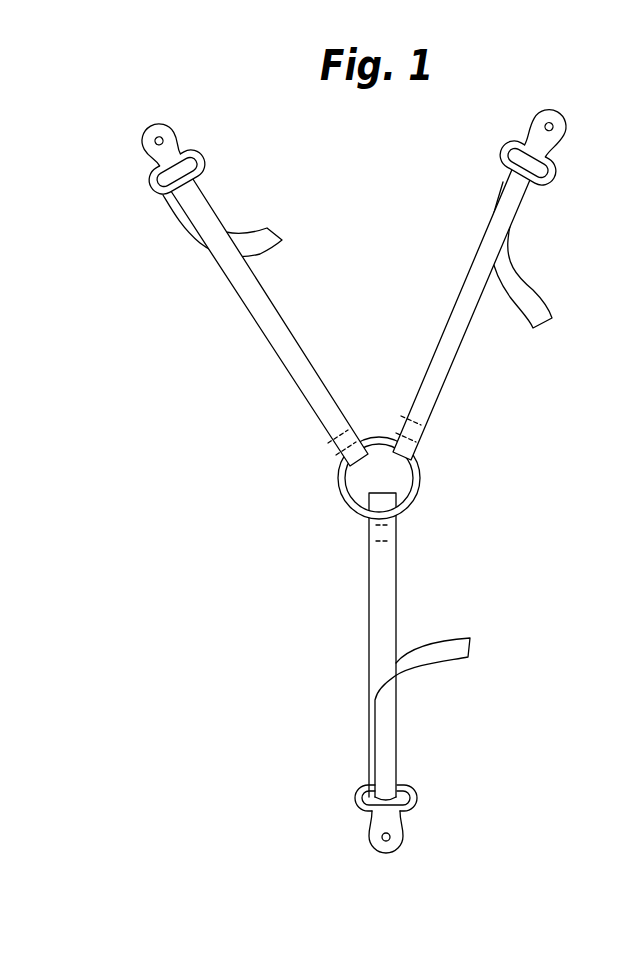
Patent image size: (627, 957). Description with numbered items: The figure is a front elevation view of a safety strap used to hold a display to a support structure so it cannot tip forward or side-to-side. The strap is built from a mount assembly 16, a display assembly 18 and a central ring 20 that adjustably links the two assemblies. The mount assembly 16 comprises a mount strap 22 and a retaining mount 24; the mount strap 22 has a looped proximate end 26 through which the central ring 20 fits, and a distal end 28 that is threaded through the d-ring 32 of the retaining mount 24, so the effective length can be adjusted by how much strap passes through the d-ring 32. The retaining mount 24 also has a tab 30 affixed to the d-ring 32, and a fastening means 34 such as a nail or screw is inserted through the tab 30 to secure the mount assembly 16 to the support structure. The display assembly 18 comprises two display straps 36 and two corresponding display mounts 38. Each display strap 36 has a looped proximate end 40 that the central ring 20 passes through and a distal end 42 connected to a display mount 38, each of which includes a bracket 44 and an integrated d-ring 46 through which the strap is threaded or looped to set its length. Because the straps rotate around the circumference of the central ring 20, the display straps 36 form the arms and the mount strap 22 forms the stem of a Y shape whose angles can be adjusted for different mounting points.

The mount assembly 16 is at (410, 646).
The display assembly 18 is at (254, 346).
The central ring 20 is at (385, 127).
The mount strap 22 is at (367, 582).
The retaining mount 24 is at (378, 833).
The looped proximate end 26 is at (395, 530).
The distal end 28 is at (476, 627).
The tab 30 is at (375, 820).
The d-ring 32 is at (360, 797).
The fastening means 34 is at (392, 833).
The display strap 36 is at (458, 297).
The display mount 38 is at (155, 161).
The looped proximate end 40 is at (330, 440).
The distal end 42 is at (258, 232).
The bracket 44 is at (135, 135).
The integrated d-ring 46 is at (177, 172).